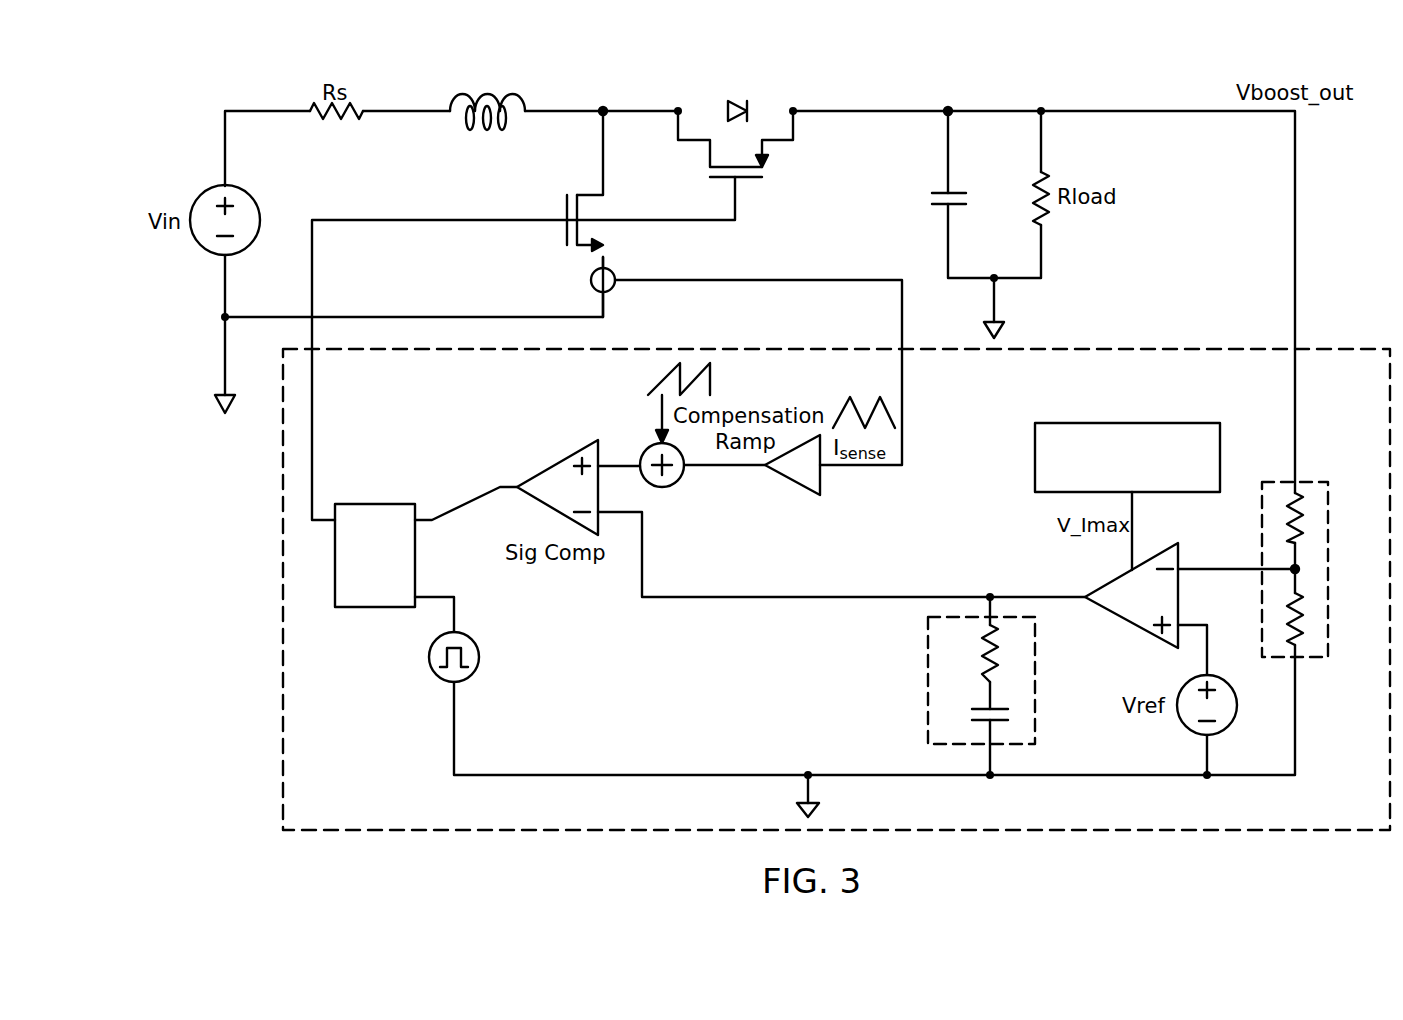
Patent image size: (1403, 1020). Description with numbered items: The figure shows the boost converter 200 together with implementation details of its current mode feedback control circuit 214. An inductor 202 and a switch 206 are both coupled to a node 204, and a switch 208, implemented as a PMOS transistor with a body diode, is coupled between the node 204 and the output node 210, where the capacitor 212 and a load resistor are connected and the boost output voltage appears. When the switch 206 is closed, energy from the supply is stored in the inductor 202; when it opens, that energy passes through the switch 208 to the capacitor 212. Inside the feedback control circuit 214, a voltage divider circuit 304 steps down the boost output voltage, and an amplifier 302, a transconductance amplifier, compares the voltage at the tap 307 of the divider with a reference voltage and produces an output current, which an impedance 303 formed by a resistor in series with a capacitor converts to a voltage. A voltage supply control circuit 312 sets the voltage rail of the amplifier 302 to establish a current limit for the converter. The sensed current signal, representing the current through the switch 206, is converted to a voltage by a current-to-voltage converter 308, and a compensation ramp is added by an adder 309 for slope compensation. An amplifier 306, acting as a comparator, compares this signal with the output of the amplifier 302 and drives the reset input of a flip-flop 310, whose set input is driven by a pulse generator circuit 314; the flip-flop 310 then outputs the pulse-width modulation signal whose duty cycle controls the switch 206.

The boost converter 200 is at (184, 94).
The inductor 202 is at (488, 128).
The node 204 is at (603, 108).
The switch 206 is at (577, 249).
The switch 208 is at (760, 180).
The output node 210 is at (948, 111).
The capacitor 212 is at (950, 193).
The feedback control circuit 214 is at (1325, 830).
The amplifier 302 is at (1136, 632).
The impedance 303 is at (929, 636).
The voltage divider circuit 304 is at (1310, 482).
The amplifier 306 is at (556, 465).
The tap 307 is at (1297, 568).
The current-to-voltage converter 308 is at (820, 482).
The adder 309 is at (662, 487).
The flip-flop 310 is at (370, 504).
The voltage supply control circuit 312 is at (1148, 423).
The pulse generator circuit 314 is at (477, 645).